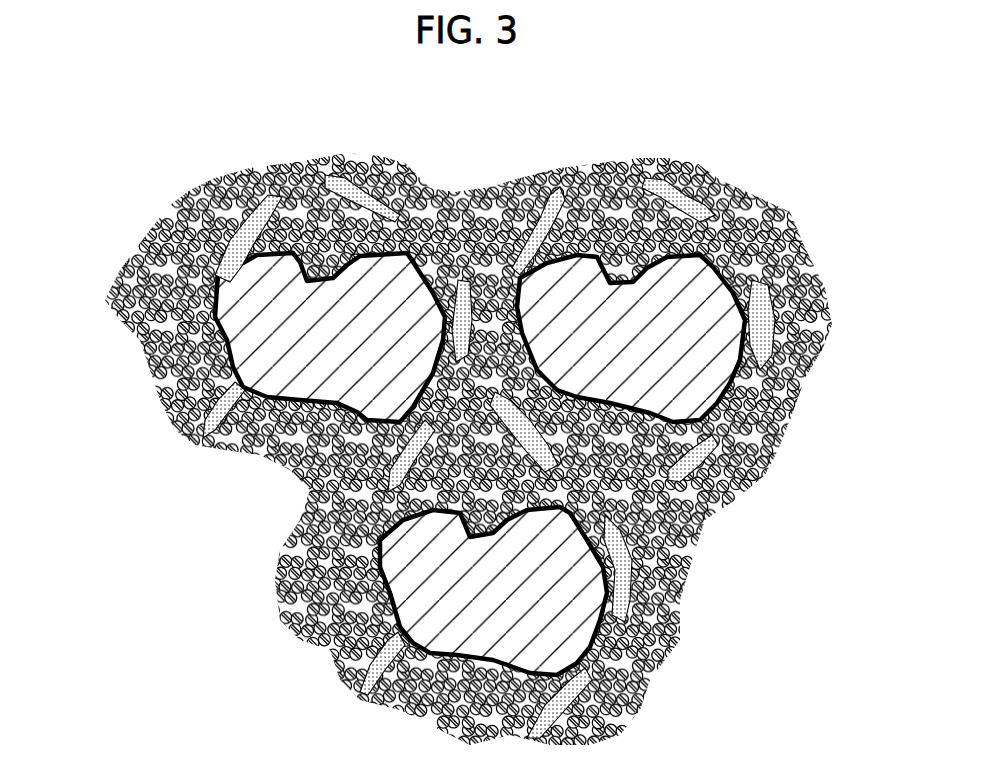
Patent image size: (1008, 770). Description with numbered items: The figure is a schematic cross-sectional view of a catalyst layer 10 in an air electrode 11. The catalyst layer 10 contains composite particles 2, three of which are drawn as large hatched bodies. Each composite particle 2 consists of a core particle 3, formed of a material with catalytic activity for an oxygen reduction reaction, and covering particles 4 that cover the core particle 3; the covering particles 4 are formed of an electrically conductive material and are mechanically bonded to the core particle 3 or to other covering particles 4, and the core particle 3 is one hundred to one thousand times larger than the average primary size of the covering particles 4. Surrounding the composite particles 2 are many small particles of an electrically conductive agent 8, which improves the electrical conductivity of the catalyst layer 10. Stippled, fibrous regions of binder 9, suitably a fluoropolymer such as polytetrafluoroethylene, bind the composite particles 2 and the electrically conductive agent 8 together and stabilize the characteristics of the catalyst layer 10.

The composite particles 2 is at (448, 465).
The core particle 3 is at (552, 597).
The covering particles 4 is at (617, 653).
The electrically conductive agent 8 is at (360, 637).
The binder 9 is at (620, 682).
The catalyst layer 10 is at (757, 152).
The air electrode 11 is at (448, 440).